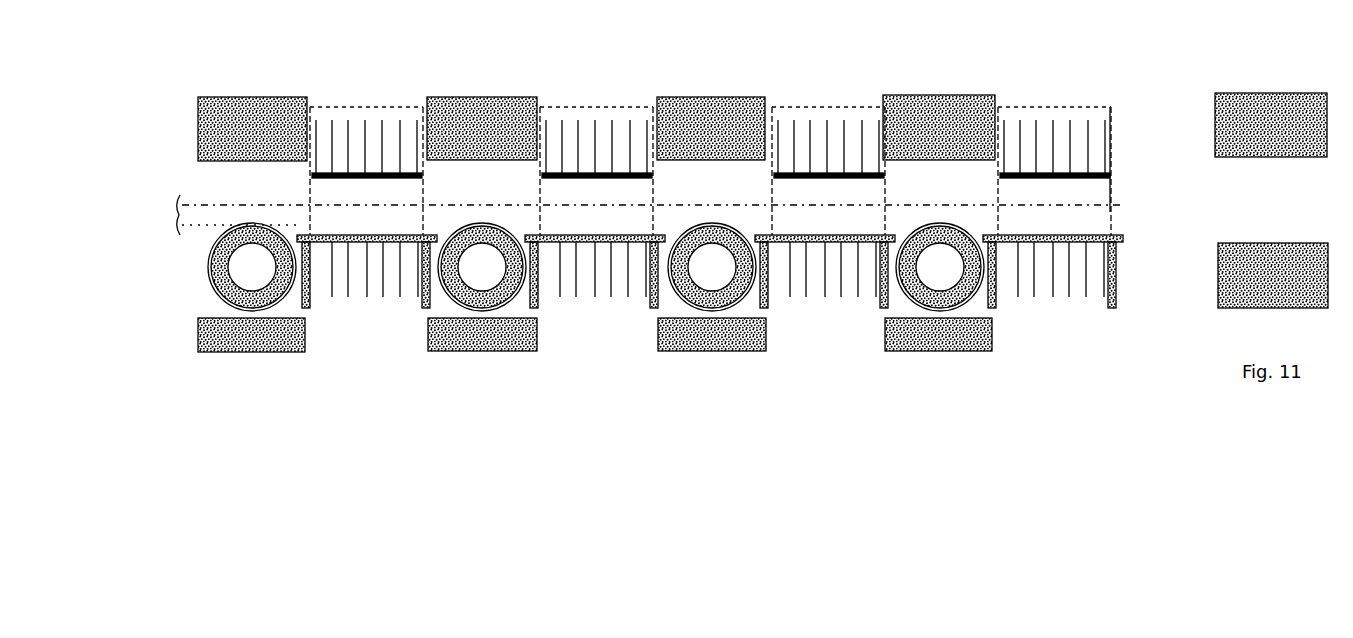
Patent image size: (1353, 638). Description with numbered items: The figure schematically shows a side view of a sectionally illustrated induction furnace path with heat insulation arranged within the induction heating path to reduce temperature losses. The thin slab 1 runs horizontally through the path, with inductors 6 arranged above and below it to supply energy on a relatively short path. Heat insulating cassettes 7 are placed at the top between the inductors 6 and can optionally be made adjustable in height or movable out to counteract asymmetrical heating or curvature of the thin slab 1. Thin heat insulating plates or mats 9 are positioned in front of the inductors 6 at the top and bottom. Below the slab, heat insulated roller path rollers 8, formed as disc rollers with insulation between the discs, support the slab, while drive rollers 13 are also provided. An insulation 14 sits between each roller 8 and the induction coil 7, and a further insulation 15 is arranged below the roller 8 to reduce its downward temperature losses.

The thin slab 1 is at (1115, 210).
The inductors 6 is at (602, 143).
The heat insulating cassettes 7 is at (262, 105).
The roller path rollers 8 is at (903, 285).
The heat insulating plates or mats 9 is at (348, 245).
The drive rollers 13 is at (1177, 137).
The insulation 14 is at (307, 297).
The insulation 15 is at (517, 337).